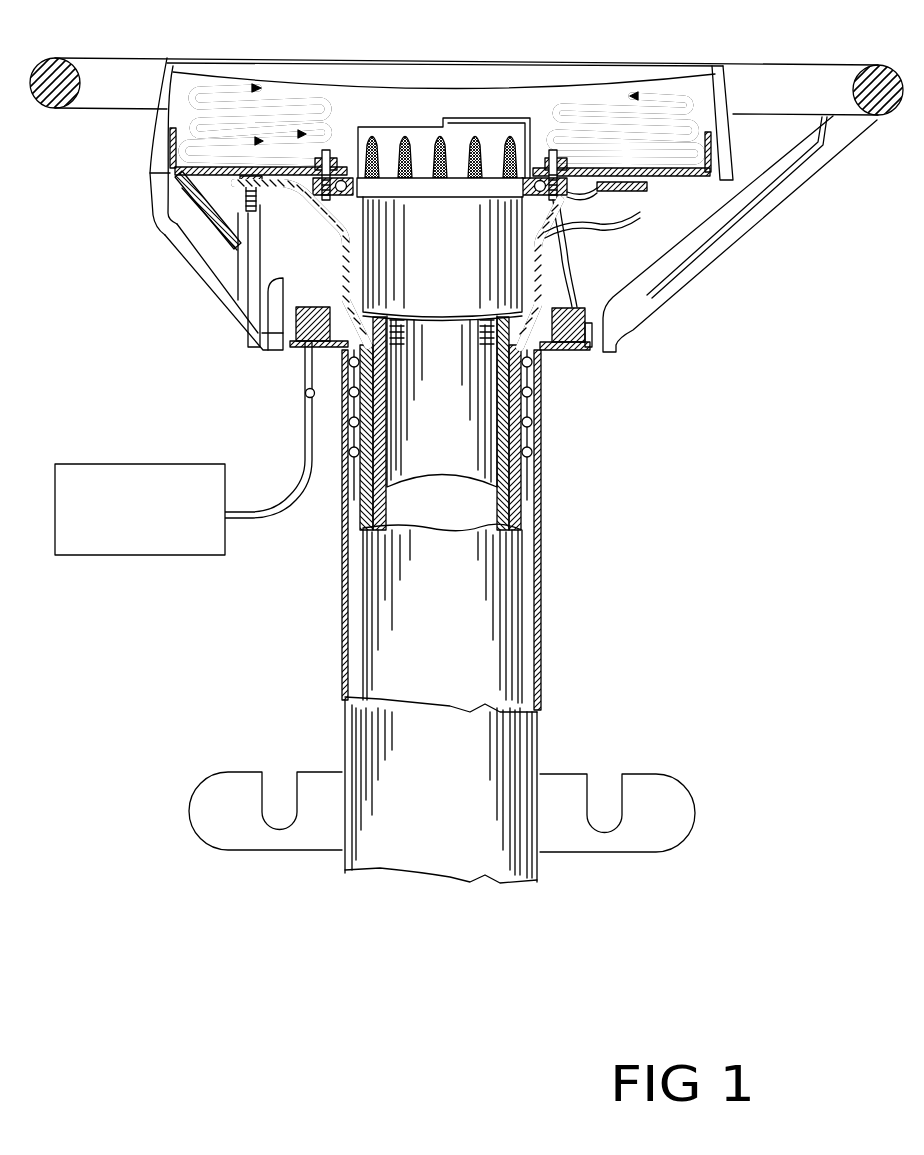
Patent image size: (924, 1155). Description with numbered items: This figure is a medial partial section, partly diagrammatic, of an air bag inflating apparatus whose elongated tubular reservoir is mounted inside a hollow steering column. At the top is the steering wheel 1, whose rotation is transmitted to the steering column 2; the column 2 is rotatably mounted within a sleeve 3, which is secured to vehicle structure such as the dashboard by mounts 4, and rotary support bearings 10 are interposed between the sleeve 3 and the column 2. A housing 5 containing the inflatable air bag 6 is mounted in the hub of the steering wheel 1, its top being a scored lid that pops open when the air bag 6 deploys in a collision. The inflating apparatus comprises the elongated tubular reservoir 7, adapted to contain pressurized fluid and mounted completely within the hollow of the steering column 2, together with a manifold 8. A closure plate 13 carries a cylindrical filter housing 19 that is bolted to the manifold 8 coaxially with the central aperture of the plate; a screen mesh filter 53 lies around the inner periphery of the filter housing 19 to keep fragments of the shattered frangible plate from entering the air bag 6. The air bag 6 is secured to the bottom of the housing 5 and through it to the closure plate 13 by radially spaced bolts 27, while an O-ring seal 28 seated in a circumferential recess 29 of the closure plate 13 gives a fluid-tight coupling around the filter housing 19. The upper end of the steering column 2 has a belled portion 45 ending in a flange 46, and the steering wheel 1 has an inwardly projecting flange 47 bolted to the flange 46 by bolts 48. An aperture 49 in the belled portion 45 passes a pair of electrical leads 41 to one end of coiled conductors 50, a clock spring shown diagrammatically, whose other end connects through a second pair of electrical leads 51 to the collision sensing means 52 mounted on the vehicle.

The steering wheel 1 is at (737, 65).
The steering column 2 is at (523, 522).
The sleeve 3 is at (540, 568).
The mounts 4 is at (315, 772).
The housing 5 is at (712, 72).
The air bag 6 is at (597, 130).
The elongated tubular reservoir 7 is at (492, 447).
The manifold 8 is at (470, 325).
The rotary support bearings 10 is at (530, 480).
The closure plate 13 is at (492, 200).
The cylindrical filter housing 19 is at (416, 127).
The bolts 27 is at (325, 160).
The O-ring seal 28 is at (368, 218).
The circumferential recess 29 is at (357, 223).
The electrical leads 41 is at (560, 250).
The belled portion 45 is at (333, 232).
The flange 46 is at (200, 213).
The inwardly projecting flange 47 is at (203, 175).
The bolts 48 is at (253, 325).
The aperture 49 is at (590, 223).
The coiled conductors 50 is at (572, 307).
The second pair of electrical leads 51 is at (300, 388).
The collision sensing means 52 is at (147, 464).
The filter 53 is at (372, 133).